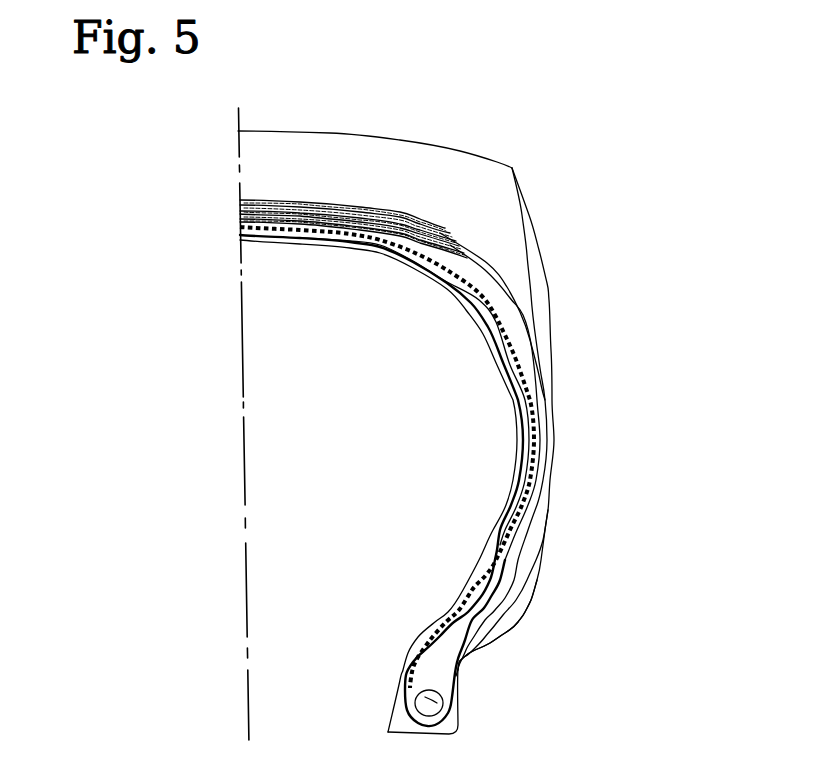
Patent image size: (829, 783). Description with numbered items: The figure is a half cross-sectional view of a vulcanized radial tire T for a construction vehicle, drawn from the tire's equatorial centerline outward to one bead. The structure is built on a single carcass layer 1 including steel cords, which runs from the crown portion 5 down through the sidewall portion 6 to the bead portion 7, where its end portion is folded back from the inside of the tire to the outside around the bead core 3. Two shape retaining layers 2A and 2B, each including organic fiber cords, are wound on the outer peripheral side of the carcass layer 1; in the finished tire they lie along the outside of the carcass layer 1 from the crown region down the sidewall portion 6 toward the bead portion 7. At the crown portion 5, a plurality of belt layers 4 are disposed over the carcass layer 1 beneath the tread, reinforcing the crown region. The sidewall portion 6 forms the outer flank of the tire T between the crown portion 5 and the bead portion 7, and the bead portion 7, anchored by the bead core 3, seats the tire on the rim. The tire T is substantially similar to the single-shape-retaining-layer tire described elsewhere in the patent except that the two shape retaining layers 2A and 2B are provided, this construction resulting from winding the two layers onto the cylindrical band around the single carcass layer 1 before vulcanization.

The radial tire for a construction vehicle T is at (632, 250).
The crown portion 5 is at (405, 141).
The belt layers 4 is at (443, 230).
The shape retaining layer 2A is at (492, 323).
The carcass layer 1 is at (527, 416).
The shape retaining layer 2B is at (540, 415).
The sidewall portion 6 is at (556, 512).
The bead portion 7 is at (496, 648).
The bead core 3 is at (430, 707).